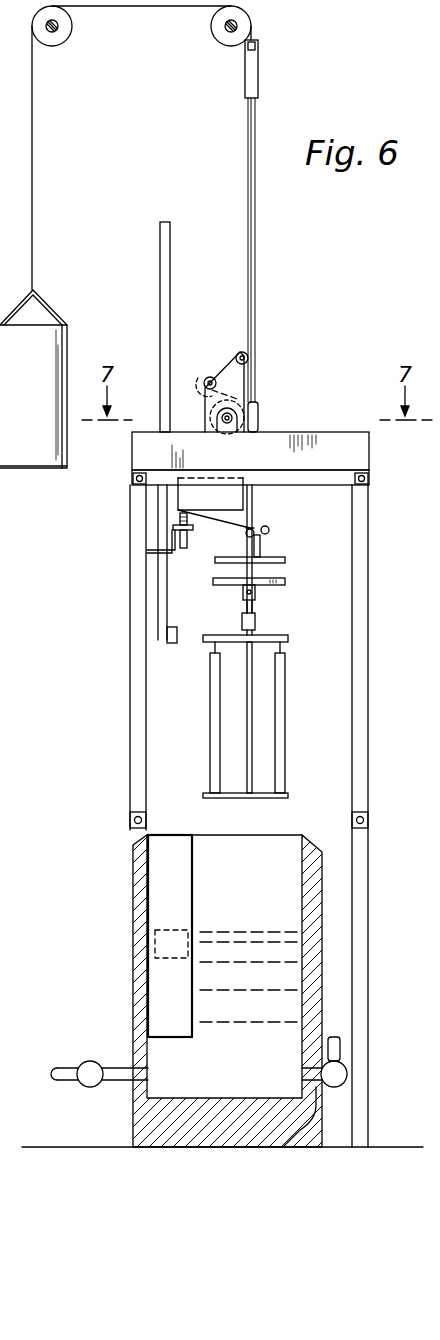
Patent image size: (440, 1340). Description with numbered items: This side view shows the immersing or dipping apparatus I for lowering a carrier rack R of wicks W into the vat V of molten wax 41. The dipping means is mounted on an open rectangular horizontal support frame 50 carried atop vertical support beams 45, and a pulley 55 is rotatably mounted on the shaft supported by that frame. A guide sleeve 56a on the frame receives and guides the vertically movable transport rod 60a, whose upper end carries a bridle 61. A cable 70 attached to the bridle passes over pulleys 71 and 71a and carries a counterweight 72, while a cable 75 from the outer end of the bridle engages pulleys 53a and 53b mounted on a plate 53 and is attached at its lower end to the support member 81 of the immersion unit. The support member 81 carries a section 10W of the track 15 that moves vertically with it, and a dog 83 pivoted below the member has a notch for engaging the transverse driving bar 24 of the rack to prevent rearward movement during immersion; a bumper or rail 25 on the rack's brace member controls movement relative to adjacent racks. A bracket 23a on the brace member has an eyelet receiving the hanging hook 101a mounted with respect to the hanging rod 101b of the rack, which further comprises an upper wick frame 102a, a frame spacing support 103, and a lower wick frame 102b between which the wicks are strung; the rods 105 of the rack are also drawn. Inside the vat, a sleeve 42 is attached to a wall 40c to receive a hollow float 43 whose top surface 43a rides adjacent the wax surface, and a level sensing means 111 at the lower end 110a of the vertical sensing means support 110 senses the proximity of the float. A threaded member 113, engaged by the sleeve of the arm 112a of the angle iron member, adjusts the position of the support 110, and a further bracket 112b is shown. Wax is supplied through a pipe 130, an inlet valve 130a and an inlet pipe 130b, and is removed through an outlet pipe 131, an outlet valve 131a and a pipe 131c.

The cable 70 is at (33, 186).
The pulley 71 is at (219, 32).
The pulley 71a is at (55, 47).
The counterweight 72 is at (24, 385).
The bridle 61 is at (245, 88).
The cable 75 is at (248, 135).
The transport rod 60a is at (248, 165).
The vertical sensing means support 110 is at (170, 252).
The lower end of the sensing means support 110a is at (160, 600).
The level sensing means 111 is at (168, 640).
The arm of angle iron member 112a is at (196, 532).
The bracket 112b is at (172, 545).
The threaded member 113 is at (190, 545).
The plate 53 is at (236, 383).
The pulley 53a is at (240, 352).
The pulley 53b is at (207, 378).
The pulley 55 is at (210, 402).
The guide sleeve 56a is at (258, 410).
The immersing or dipping apparatus I is at (272, 358).
The horizontal support frame 50 is at (338, 482).
The vertical support beam 45 is at (130, 690).
The support member 81 is at (258, 522).
The section of the track 10W is at (270, 530).
The track 15 is at (262, 546).
The dog 83 is at (286, 559).
The transverse driving bar 24 is at (286, 578).
The bumper or rail 25 is at (256, 592).
The bracket 23a is at (256, 620).
The hanging hook 101a is at (243, 596).
The hanging rod 101b is at (242, 617).
The upper wick frame 102a is at (289, 638).
The lower wick frame 102b is at (203, 795).
The frame spacing support 103 is at (252, 708).
The rack rod 105 is at (212, 721).
The wick W is at (283, 648).
The carrier rack R is at (295, 744).
The vat V is at (318, 895).
The molten wax 41 is at (280, 975).
The sleeve 42 is at (196, 855).
The wall of the vat 40c is at (150, 886).
The float 43 is at (188, 936).
The top surface of the float 43a is at (178, 928).
The pipe 130 is at (68, 1072).
The inlet valve 130a is at (85, 1088).
The inlet pipe 130b is at (115, 1065).
The outlet pipe 131 is at (283, 1147).
The outlet valve 131a is at (344, 1086).
The pipe 131c is at (340, 1048).